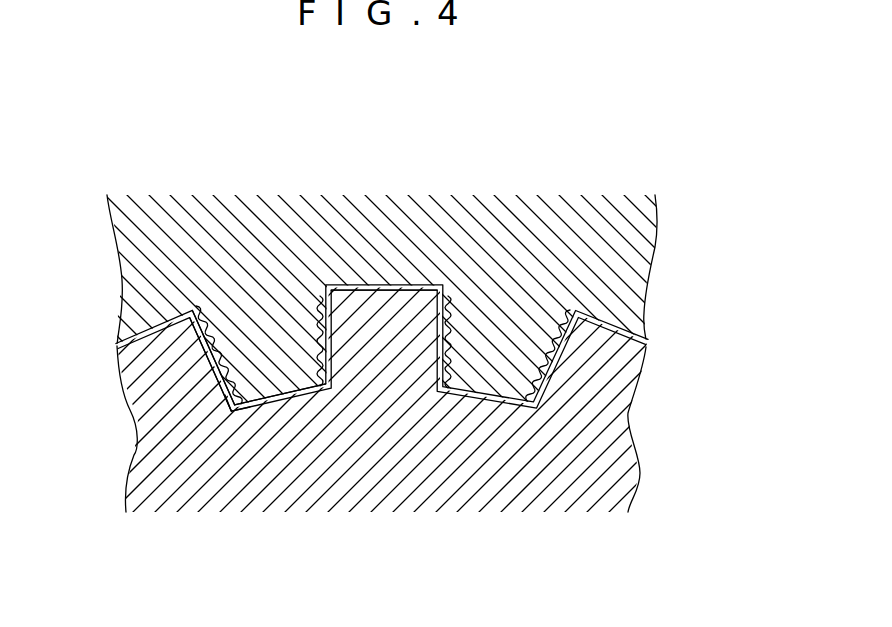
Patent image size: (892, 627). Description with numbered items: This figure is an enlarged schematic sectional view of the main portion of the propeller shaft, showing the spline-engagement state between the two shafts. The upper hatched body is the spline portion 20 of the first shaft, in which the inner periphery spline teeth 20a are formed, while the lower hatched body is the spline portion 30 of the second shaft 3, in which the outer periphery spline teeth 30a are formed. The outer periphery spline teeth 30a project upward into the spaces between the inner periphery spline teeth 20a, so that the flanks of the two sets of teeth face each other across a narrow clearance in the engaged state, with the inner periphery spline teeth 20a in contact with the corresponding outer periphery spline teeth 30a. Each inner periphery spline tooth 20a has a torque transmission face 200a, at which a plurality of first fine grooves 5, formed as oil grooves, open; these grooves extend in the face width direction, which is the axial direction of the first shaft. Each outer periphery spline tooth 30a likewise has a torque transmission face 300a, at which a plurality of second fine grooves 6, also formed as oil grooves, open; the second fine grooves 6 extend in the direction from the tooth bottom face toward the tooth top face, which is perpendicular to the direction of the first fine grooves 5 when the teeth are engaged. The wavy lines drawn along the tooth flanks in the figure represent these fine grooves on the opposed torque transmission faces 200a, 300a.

The second shaft 3 is at (446, 352).
The first fine grooves 5 is at (226, 400).
The second fine grooves 6 is at (210, 342).
The spline portion 20 is at (245, 218).
The inner periphery spline teeth 20a is at (278, 384).
The spline portion 30 is at (602, 467).
The outer periphery spline teeth 30a is at (393, 300).
The torque transmission face 200a is at (207, 363).
The torque transmission face 300a is at (208, 318).